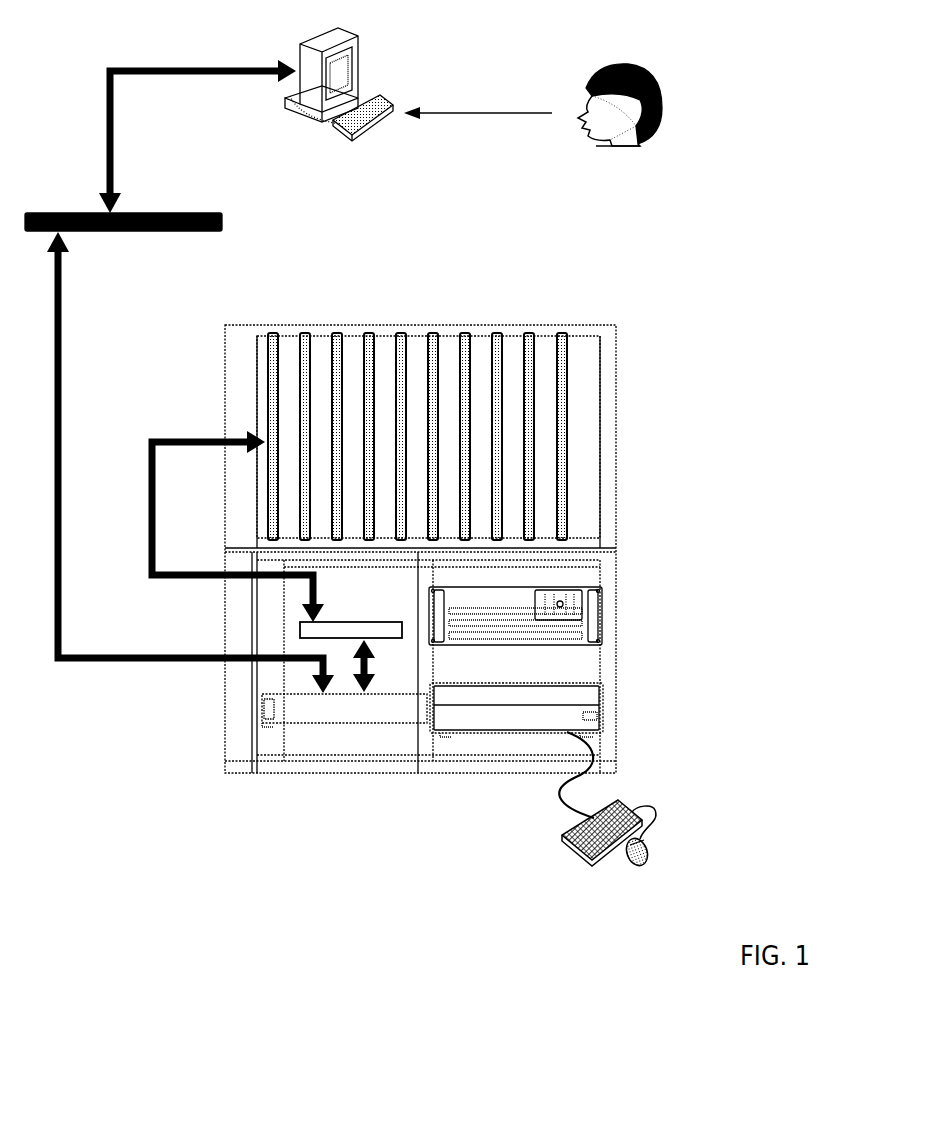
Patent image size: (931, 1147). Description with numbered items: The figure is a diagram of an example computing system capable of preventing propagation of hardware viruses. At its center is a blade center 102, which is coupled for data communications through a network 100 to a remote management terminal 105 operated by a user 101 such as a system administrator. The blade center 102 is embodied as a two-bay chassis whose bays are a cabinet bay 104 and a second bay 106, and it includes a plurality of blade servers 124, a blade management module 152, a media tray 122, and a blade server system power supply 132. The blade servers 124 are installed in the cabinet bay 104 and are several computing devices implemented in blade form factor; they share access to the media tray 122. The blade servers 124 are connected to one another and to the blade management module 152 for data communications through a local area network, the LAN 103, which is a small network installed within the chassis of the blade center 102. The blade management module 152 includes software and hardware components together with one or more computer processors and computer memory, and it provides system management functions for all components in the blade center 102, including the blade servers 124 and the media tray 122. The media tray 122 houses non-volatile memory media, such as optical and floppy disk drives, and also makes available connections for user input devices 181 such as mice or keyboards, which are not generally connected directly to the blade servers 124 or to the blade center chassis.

The network 100 is at (238, 222).
The user 101 is at (700, 124).
The blade center 102 is at (615, 308).
The local area network (LAN) 103 is at (402, 620).
The cabinet bay 104 is at (225, 400).
The remote management terminal 105 is at (468, 51).
The chassis bay 106 is at (228, 630).
The media tray 122 is at (620, 708).
The blade servers 124 is at (592, 444).
The blade server system power supply 132 is at (620, 617).
The blade management module 152 is at (246, 711).
The user input devices 181 is at (752, 853).